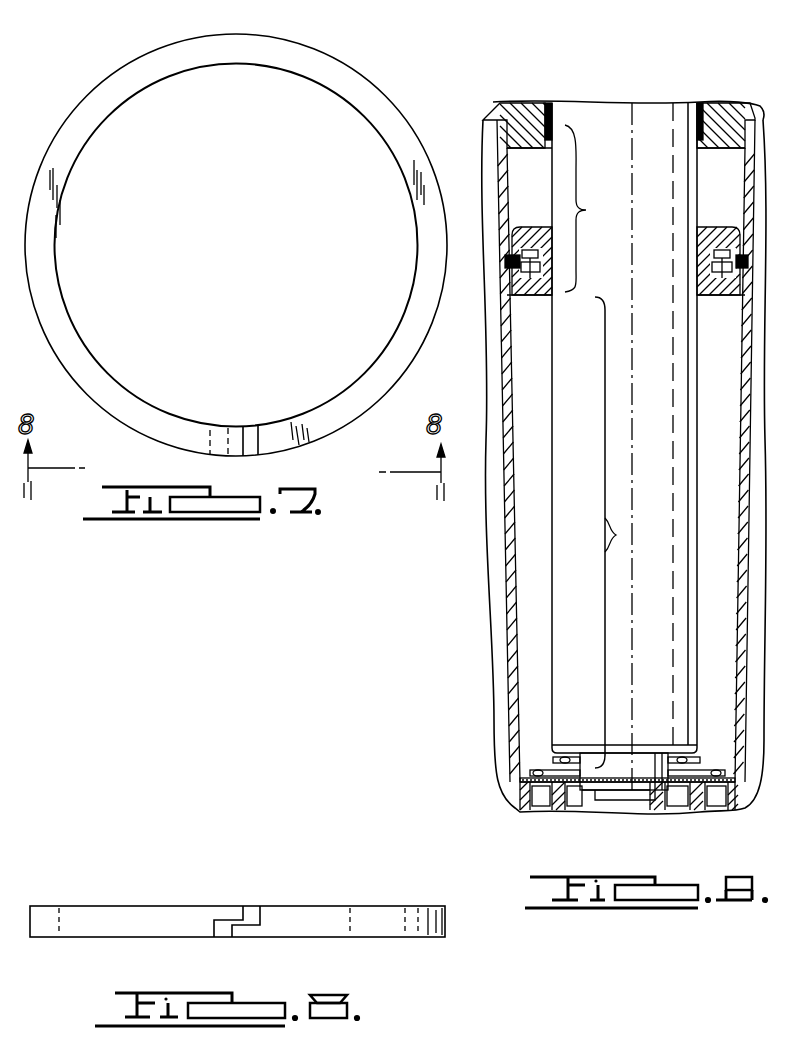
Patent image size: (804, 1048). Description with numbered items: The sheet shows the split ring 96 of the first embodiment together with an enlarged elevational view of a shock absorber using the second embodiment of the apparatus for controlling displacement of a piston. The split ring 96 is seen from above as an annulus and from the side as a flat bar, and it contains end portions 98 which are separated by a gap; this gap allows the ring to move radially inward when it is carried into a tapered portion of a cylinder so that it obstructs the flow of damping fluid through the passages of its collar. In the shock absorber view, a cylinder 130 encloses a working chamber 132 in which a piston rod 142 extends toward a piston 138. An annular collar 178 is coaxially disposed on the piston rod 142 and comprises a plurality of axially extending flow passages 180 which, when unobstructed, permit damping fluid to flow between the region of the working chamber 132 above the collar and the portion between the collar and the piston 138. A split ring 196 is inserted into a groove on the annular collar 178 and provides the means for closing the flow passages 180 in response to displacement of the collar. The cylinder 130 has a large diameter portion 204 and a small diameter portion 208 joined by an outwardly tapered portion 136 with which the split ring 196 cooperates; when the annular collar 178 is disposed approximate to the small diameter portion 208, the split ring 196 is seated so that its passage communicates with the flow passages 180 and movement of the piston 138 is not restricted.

In FIG. 7, the split ring 96 is at (313, 62).
In FIG. 8, the split ring 96 is at (137, 906).
In FIG. 8, the end portions 98 is at (247, 928).
In FIG. 9, the cylinder 130 is at (509, 553).
In FIG. 9, the working chamber 132 is at (536, 637).
In FIG. 9, the outwardly tapered portion 136 is at (627, 532).
In FIG. 9, the piston 138 is at (560, 806).
In FIG. 9, the piston rod 142 is at (600, 120).
In FIG. 9, the annular collar 178 is at (540, 238).
In FIG. 9, the flow passages 180 is at (527, 240).
In FIG. 9, the split ring 196 is at (511, 270).
In FIG. 9, the large diameter portion 204 is at (596, 208).
In FIG. 9, the small diameter portion 208 is at (610, 768).